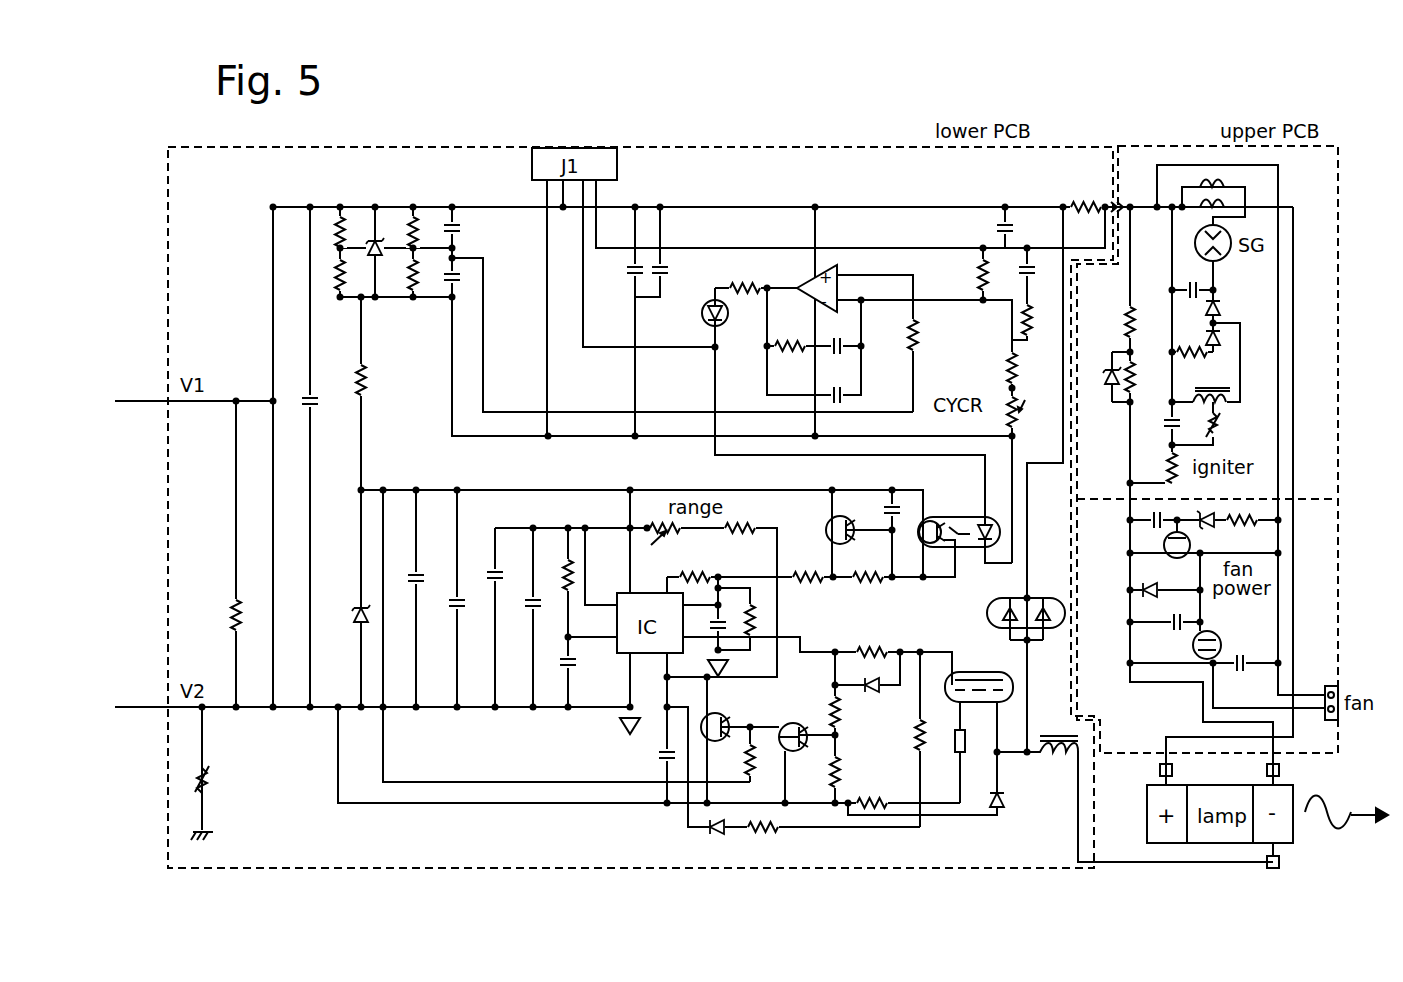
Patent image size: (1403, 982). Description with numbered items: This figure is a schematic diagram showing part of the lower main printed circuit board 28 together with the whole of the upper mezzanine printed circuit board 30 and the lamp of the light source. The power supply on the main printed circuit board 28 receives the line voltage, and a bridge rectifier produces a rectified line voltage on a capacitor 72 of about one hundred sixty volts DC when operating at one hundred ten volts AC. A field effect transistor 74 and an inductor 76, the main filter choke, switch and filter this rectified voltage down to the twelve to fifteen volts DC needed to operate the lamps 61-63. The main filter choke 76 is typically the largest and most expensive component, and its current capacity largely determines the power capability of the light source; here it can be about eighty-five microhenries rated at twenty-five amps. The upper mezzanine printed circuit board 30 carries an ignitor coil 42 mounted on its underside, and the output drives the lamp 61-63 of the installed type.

The lower printed circuit board 28 is at (497, 868).
The upper printed circuit board 30 is at (1185, 146).
The igniter circuit 42 is at (1327, 194).
The supply voltage line 72 is at (276, 607).
The fuse 74 is at (976, 670).
The inductor 76 is at (1059, 766).
The lamp terminals 61-63 is at (1190, 786).